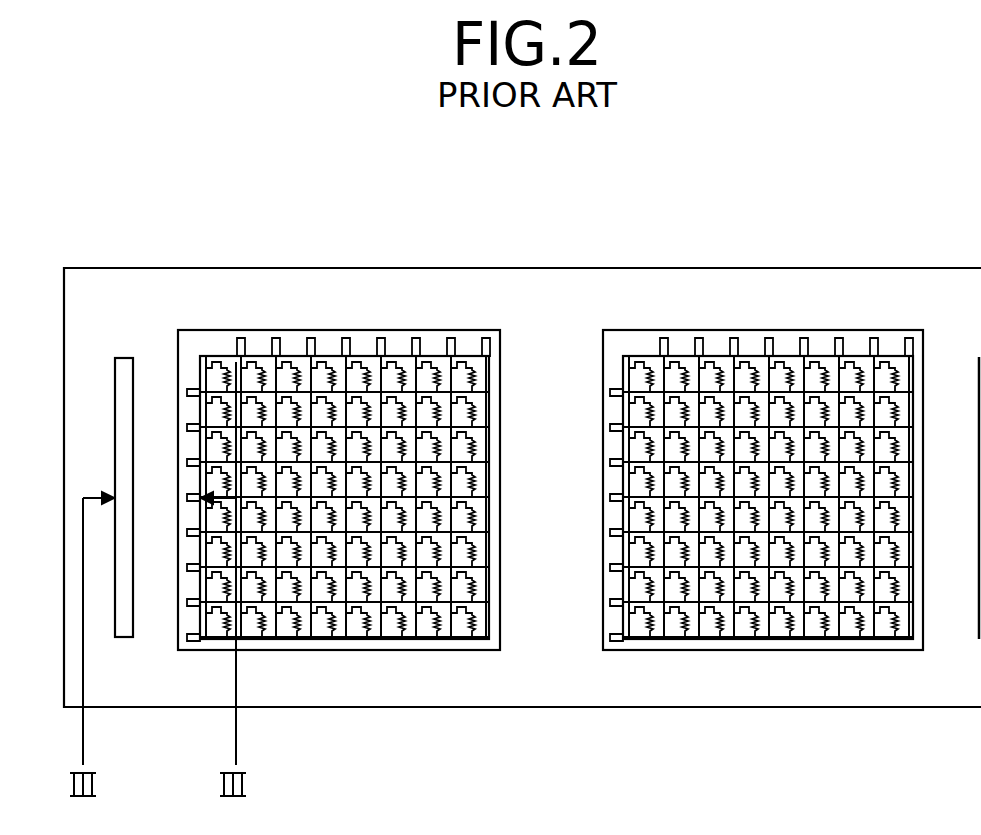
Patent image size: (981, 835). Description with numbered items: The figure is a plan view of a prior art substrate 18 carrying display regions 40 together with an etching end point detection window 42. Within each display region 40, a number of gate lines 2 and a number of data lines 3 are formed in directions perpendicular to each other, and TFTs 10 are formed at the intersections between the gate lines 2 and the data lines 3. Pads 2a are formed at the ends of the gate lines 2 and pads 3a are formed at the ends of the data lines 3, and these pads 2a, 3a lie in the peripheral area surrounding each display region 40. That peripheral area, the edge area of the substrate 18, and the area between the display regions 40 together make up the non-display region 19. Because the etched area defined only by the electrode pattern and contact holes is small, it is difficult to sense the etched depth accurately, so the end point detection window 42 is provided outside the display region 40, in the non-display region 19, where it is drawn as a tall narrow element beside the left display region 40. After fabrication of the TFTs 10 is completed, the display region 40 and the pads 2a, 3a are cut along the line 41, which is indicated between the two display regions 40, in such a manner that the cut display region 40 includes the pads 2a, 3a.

The substrate 18 is at (885, 268).
The non-display region 19 is at (488, 310).
The line 41 is at (503, 332).
The display region 40 is at (620, 420).
The gate lines 2 is at (268, 598).
The data lines 3 is at (382, 627).
The TFTs 10 is at (234, 350).
The pads 2a is at (190, 389).
The pads 3a is at (347, 338).
The end point detection (EDP) window 42 is at (131, 358).